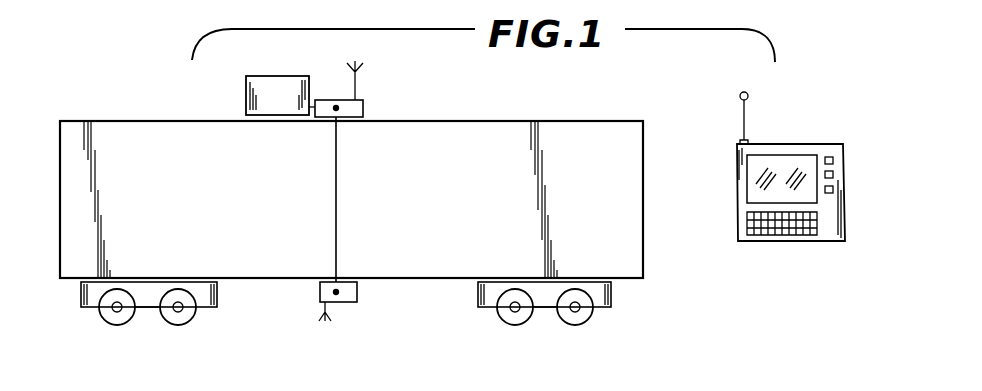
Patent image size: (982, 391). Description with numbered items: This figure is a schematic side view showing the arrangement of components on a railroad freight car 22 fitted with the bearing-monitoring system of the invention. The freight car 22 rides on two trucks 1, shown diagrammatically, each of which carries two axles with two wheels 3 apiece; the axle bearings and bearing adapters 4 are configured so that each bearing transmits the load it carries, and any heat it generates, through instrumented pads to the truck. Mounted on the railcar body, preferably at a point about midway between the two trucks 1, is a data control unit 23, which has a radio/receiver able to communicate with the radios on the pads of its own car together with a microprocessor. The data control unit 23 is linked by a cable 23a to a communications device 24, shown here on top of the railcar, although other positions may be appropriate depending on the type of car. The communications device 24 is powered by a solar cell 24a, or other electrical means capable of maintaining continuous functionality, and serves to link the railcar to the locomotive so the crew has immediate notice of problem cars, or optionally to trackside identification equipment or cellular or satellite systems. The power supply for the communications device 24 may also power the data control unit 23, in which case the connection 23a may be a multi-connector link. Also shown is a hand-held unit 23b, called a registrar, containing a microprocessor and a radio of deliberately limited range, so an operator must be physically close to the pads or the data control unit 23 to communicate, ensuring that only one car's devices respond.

The truck 1 is at (148, 318).
The wheel 3 is at (190, 320).
The bearing adapter 4 is at (213, 390).
The railroad freight car 22 is at (653, 268).
The data control unit 23 is at (347, 302).
The cable 23a is at (336, 215).
The hand-held unit 23b is at (785, 242).
The communications device 24 is at (363, 107).
The solar cell 24a is at (288, 60).